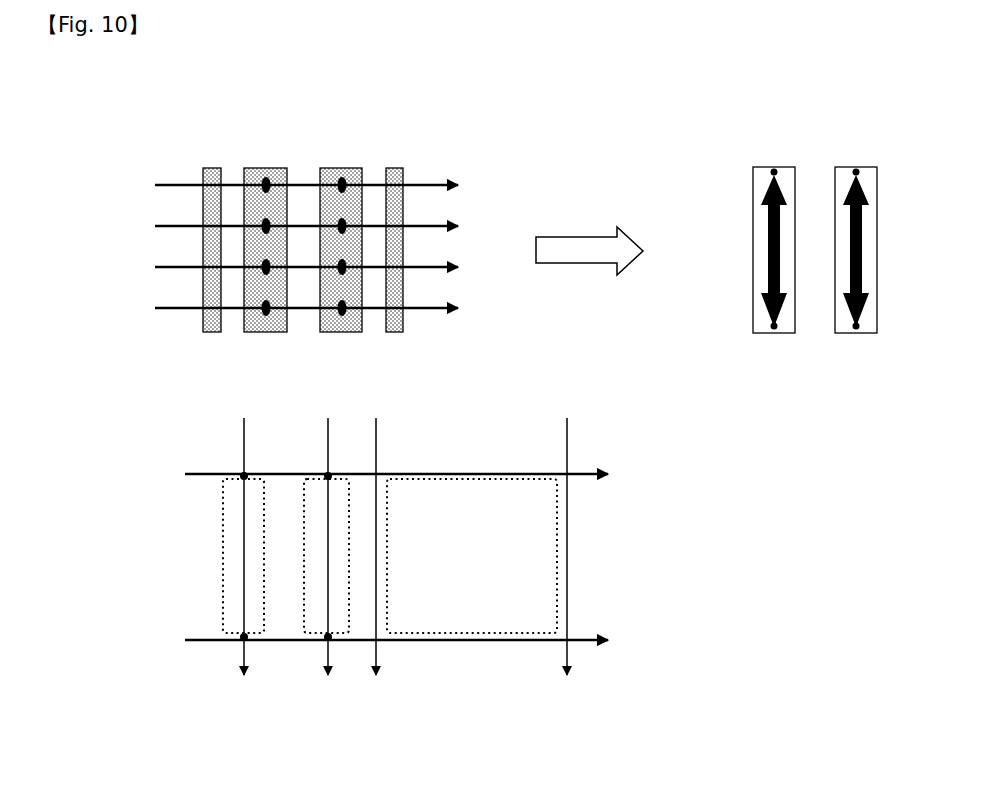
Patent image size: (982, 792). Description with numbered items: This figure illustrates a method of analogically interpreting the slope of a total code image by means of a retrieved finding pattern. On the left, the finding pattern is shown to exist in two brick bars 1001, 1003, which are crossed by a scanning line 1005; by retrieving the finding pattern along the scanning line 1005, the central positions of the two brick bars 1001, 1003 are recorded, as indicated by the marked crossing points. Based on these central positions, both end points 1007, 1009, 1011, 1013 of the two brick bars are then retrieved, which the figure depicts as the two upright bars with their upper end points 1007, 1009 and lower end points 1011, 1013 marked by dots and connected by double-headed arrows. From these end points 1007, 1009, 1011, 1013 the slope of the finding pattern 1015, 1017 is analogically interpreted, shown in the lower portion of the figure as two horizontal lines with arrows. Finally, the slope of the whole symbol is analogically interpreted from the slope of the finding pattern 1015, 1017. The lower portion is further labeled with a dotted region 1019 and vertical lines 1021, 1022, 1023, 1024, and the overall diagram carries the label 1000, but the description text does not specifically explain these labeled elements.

The layout diagram 1000 is at (805, 718).
The brick bar 1001 is at (262, 168).
The brick bar 1003 is at (338, 168).
The scanning line 1005 is at (430, 184).
The end point 1007 is at (774, 168).
The end point 1009 is at (856, 168).
The end point 1011 is at (774, 331).
The end point 1013 is at (856, 331).
The finding pattern 1015 is at (412, 471).
The finding pattern 1017 is at (203, 642).
The cell region 1019 is at (499, 497).
The first bit line 1021 is at (248, 678).
The second bit line 1022 is at (332, 678).
The third bit line 1023 is at (378, 678).
The fourth bit line 1024 is at (570, 678).